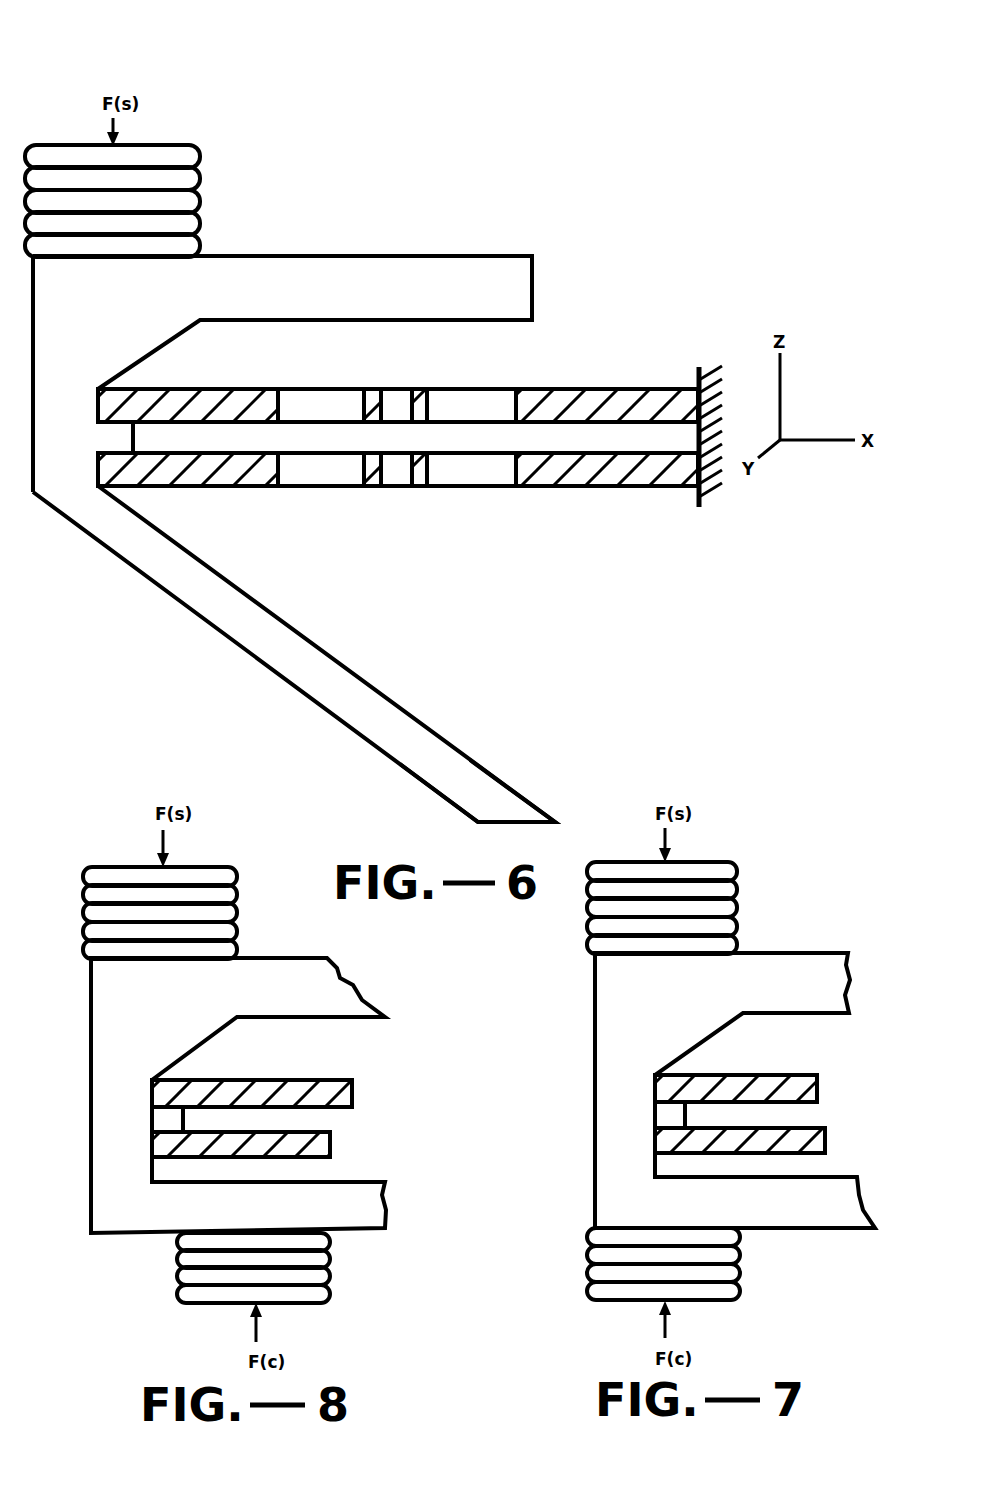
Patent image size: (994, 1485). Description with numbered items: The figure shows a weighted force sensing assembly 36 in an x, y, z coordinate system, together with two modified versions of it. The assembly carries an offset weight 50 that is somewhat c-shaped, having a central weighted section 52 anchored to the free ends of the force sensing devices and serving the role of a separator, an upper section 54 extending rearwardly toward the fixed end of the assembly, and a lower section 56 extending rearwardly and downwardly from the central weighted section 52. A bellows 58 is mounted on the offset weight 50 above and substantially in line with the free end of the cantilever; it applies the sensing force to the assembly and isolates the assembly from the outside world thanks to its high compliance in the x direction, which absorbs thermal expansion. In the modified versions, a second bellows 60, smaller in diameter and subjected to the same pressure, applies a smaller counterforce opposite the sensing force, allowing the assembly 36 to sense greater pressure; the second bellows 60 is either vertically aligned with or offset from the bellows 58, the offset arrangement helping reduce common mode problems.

In FIG. 6, the force sensing assembly 36 is at (582, 76).
In FIG. 6, the offset weight 50 is at (155, 608).
In FIG. 7, the offset weight 50 is at (584, 1150).
In FIG. 6, the central weighted section 52 is at (60, 465).
In FIG. 6, the upper section 54 is at (447, 265).
In FIG. 6, the lower section 56 is at (418, 757).
In FIG. 6, the bellows 58 is at (205, 196).
In FIG. 7, the bellows 58 is at (732, 905).
In FIG. 7, the second bellows 60 is at (732, 1273).